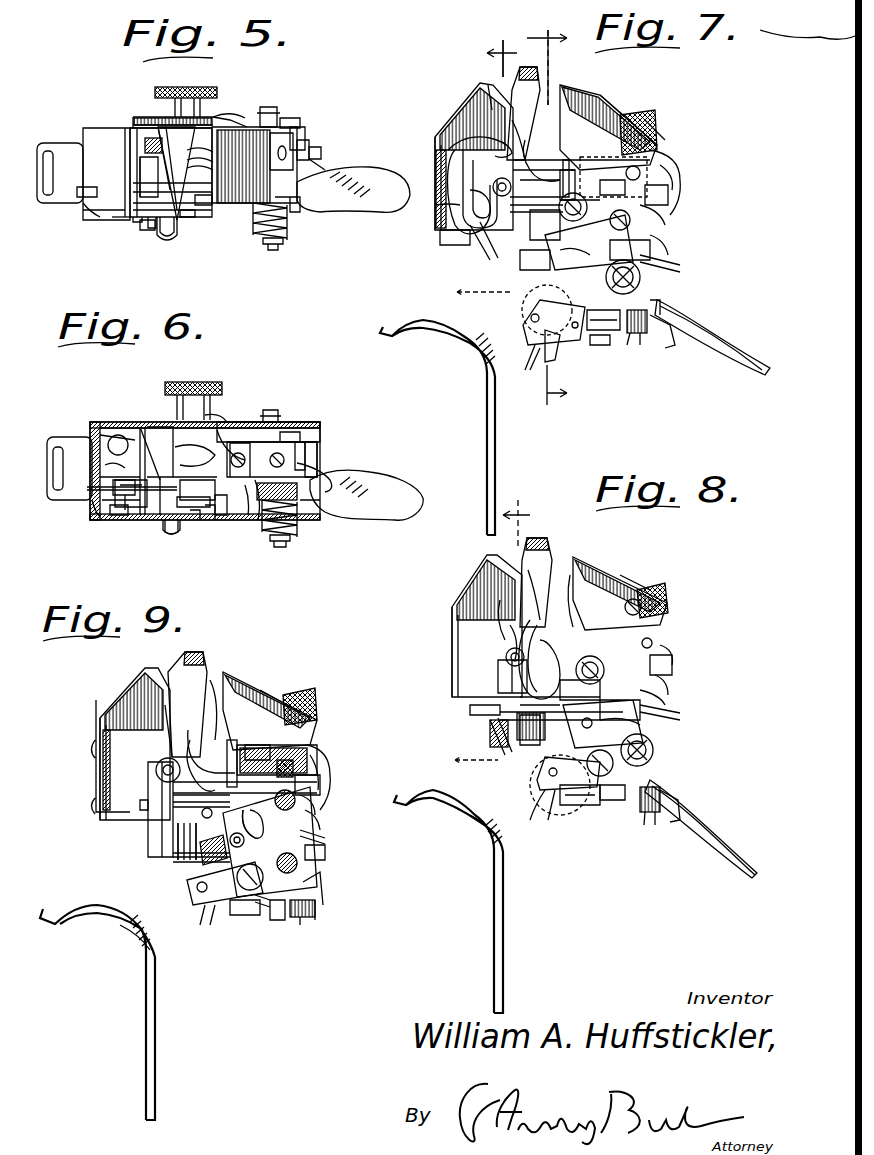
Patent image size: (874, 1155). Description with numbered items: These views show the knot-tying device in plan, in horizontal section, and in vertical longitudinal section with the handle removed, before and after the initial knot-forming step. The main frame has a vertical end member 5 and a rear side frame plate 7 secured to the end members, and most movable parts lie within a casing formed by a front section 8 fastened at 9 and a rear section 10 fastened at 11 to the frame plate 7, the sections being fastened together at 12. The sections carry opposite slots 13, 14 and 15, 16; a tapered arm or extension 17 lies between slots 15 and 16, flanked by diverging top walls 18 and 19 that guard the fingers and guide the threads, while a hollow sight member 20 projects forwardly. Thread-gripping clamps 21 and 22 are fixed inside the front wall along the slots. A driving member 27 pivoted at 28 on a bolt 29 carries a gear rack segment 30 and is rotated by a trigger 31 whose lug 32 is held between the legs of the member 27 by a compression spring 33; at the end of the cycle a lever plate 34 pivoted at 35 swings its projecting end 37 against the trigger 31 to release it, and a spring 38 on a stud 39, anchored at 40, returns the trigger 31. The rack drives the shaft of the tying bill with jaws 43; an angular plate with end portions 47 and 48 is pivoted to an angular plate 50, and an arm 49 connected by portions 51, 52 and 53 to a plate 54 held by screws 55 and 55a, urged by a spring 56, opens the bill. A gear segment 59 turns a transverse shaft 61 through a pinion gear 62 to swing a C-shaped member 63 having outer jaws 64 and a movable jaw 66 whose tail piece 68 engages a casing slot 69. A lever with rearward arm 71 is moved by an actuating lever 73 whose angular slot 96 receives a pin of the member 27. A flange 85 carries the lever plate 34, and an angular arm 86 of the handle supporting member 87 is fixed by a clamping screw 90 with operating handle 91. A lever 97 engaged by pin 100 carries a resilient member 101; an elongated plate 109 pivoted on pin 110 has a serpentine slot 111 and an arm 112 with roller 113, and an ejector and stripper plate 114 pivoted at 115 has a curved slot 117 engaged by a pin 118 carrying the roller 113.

In FIG. 5, the end member 5 is at (140, 170).
In FIG. 6, the end member 5 is at (115, 435).
In FIG. 9, the end member 5 is at (173, 857).
In FIG. 9, the rear side frame plate 7 is at (173, 805).
In FIG. 5, the front casing section 8 is at (120, 217).
In FIG. 6, the front casing section 8 is at (200, 520).
In FIG. 6, the fastening 9 is at (297, 492).
In FIG. 5, the rear casing section 10 is at (120, 128).
In FIG. 6, the rear casing section 10 is at (125, 422).
In FIG. 7, the rear casing section 10 is at (585, 95).
In FIG. 8, the rear casing section 10 is at (585, 560).
In FIG. 9, the rear casing section 10 is at (255, 675).
In FIG. 7, the fastening 11 is at (472, 159).
In FIG. 5, the fastening 12 is at (270, 158).
In FIG. 7, the fastening 12 is at (425, 230).
In FIG. 8, the fastening 12 is at (688, 584).
In FIG. 9, the fastening 12 is at (95, 800).
In FIG. 5, the slot 13 is at (152, 228).
In FIG. 6, the slot 13 is at (140, 520).
In FIG. 5, the slot 14 is at (187, 218).
In FIG. 6, the slot 14 is at (180, 520).
In FIG. 5, the slot 15 is at (160, 130).
In FIG. 6, the slot 15 is at (155, 395).
In FIG. 7, the slot 15 is at (483, 122).
In FIG. 8, the slot 15 is at (503, 605).
In FIG. 9, the slot 15 is at (165, 720).
In FIG. 5, the slot 16 is at (215, 120).
In FIG. 6, the slot 16 is at (205, 415).
In FIG. 7, the slot 16 is at (520, 130).
In FIG. 8, the slot 16 is at (542, 605).
In FIG. 9, the slot 16 is at (215, 690).
In FIG. 5, the arm or extension 17 is at (176, 173).
In FIG. 7, the arm or extension 17 is at (530, 67).
In FIG. 8, the arm or extension 17 is at (545, 540).
In FIG. 9, the arm or extension 17 is at (195, 652).
In FIG. 5, the top wall 18 is at (295, 200).
In FIG. 7, the top wall 18 is at (620, 120).
In FIG. 9, the top wall 18 is at (290, 705).
In FIG. 5, the top wall 19 is at (88, 137).
In FIG. 7, the top wall 19 is at (470, 90).
In FIG. 8, the top wall 19 is at (478, 568).
In FIG. 9, the top wall 19 is at (130, 680).
In FIG. 5, the hollow elongated member 20 is at (172, 235).
In FIG. 6, the hollow elongated member 20 is at (170, 532).
In FIG. 6, the thread-gripping clamp 21 is at (210, 520).
In FIG. 7, the thread-gripping clamp 21 is at (581, 346).
In FIG. 6, the thread-gripping clamp 22 is at (120, 492).
In FIG. 7, the driving member 27 is at (675, 258).
In FIG. 8, the driving member 27 is at (670, 708).
In FIG. 9, the driving member 27 is at (317, 835).
In FIG. 9, the pivot 28 is at (300, 863).
In FIG. 5, the bolt 29 is at (273, 248).
In FIG. 6, the bolt 29 is at (285, 540).
In FIG. 9, the bolt 29 is at (272, 920).
In FIG. 8, the gear rack segment 30 is at (665, 650).
In FIG. 9, the gear rack segment 30 is at (215, 760).
In FIG. 5, the trigger 31 is at (365, 180).
In FIG. 6, the trigger 31 is at (395, 488).
In FIG. 7, the trigger 31 is at (690, 308).
In FIG. 8, the trigger 31 is at (690, 800).
In FIG. 8, the lug 32 is at (655, 748).
In FIG. 9, the lug 32 is at (320, 850).
In FIG. 5, the helical compression spring 33 is at (285, 225).
In FIG. 6, the helical compression spring 33 is at (292, 522).
In FIG. 7, the lever plate 34 is at (612, 335).
In FIG. 8, the lever plate 34 is at (580, 805).
In FIG. 9, the lever plate 34 is at (240, 915).
In FIG. 9, the pivot 35 is at (255, 905).
In FIG. 5, the projecting end 37 is at (315, 152).
In FIG. 9, the projecting end 37 is at (325, 880).
In FIG. 7, the spring 38 is at (642, 340).
In FIG. 8, the spring 38 is at (640, 812).
In FIG. 9, the spring 38 is at (295, 917).
In FIG. 7, the stud 39 is at (632, 345).
In FIG. 8, the stud 39 is at (650, 825).
In FIG. 9, the stud 39 is at (315, 920).
In FIG. 5, the anchor point 40 is at (322, 163).
In FIG. 7, the anchor point 40 is at (675, 345).
In FIG. 8, the anchor point 40 is at (672, 822).
In FIG. 7, the tying bill jaws 43 is at (536, 156).
In FIG. 9, the tying bill jaws 43 is at (190, 740).
In FIG. 5, the forwardly extending end portion 47 is at (203, 208).
In FIG. 6, the forwardly extending end portion 47 is at (222, 515).
In FIG. 7, the forwardly extending end portion 47 is at (560, 180).
In FIG. 8, the forwardly extending end portion 47 is at (570, 575).
In FIG. 9, the forwardly extending end portion 47 is at (245, 745).
In FIG. 6, the end portion 48 is at (262, 505).
In FIG. 6, the arm 49 is at (250, 500).
In FIG. 7, the arm 49 is at (660, 240).
In FIG. 8, the arm 49 is at (665, 672).
In FIG. 9, the arm 49 is at (320, 805).
In FIG. 6, the angular plate 50 is at (300, 440).
In FIG. 9, the angular plate 50 is at (278, 805).
In FIG. 7, the upwardly extending portion 51 is at (660, 215).
In FIG. 9, the upwardly extending portion 51 is at (320, 790).
In FIG. 5, the rearwardly extending portion 52 is at (303, 142).
In FIG. 6, the rearwardly extending portion 52 is at (318, 448).
In FIG. 7, the rearwardly extending portion 52 is at (665, 195).
In FIG. 8, the rearwardly extending portion 52 is at (670, 660).
In FIG. 9, the rearwardly extending portion 52 is at (320, 775).
In FIG. 5, the upwardly extending portion 53 is at (297, 128).
In FIG. 6, the upwardly extending portion 53 is at (310, 436).
In FIG. 9, the upwardly extending portion 53 is at (320, 760).
In FIG. 6, the plate 54 is at (270, 410).
In FIG. 5, the screw 55 is at (268, 107).
In FIG. 6, the screw 55 is at (232, 425).
In FIG. 5, the screw 55a is at (288, 118).
In FIG. 6, the screw 55a is at (290, 428).
In FIG. 6, the spring 56 is at (328, 468).
In FIG. 7, the spring 56 is at (675, 160).
In FIG. 9, the spring 56 is at (325, 740).
In FIG. 9, the gear segment 59 is at (140, 805).
In FIG. 7, the transverse horizontal shaft 61 is at (440, 205).
In FIG. 8, the transverse horizontal shaft 61 is at (508, 665).
In FIG. 9, the transverse horizontal shaft 61 is at (160, 760).
In FIG. 5, the pinion gear 62 is at (145, 147).
In FIG. 6, the pinion gear 62 is at (112, 450).
In FIG. 5, the C-shaped member 63 is at (135, 220).
In FIG. 6, the C-shaped member 63 is at (118, 512).
In FIG. 7, the C-shaped member 63 is at (450, 245).
In FIG. 8, the C-shaped member 63 is at (510, 630).
In FIG. 7, the outer jaws 64 is at (493, 95).
In FIG. 7, the movable jaw 66 is at (495, 178).
In FIG. 5, the tail piece 68 is at (70, 203).
In FIG. 6, the tail piece 68 is at (60, 500).
In FIG. 7, the tail piece 68 is at (440, 160).
In FIG. 8, the tail piece 68 is at (565, 630).
In FIG. 5, the slot 69 is at (95, 220).
In FIG. 6, the slot 69 is at (95, 515).
In FIG. 7, the slot 69 is at (440, 130).
In FIG. 8, the slot 69 is at (450, 600).
In FIG. 9, the slot 69 is at (98, 770).
In FIG. 9, the rearwardly projecting arm 71 is at (178, 860).
In FIG. 9, the actuating lever 73 is at (190, 900).
In FIG. 8, the flange 85 is at (565, 820).
In FIG. 9, the flange 85 is at (210, 920).
In FIG. 8, the angular arm 86 is at (480, 825).
In FIG. 9, the angular arm 86 is at (125, 927).
In FIG. 8, the supporting member 87 is at (503, 925).
In FIG. 9, the supporting member 87 is at (155, 1057).
In FIG. 7, the clamping screw 90 is at (540, 345).
In FIG. 8, the clamping screw 90 is at (587, 764).
In FIG. 5, the operating handle 91 is at (205, 90).
In FIG. 6, the operating handle 91 is at (195, 382).
In FIG. 7, the operating handle 91 is at (520, 312).
In FIG. 8, the operating handle 91 is at (530, 776).
In FIG. 9, the angular elongated slot 96 is at (244, 876).
In FIG. 7, the lever 97 is at (480, 250).
In FIG. 8, the lever 97 is at (492, 727).
In FIG. 7, the pin 100 is at (600, 350).
In FIG. 9, the pin 100 is at (259, 824).
In FIG. 8, the resilient flexible member 101 is at (470, 712).
In FIG. 7, the elongated plate 109 is at (610, 226).
In FIG. 8, the elongated plate 109 is at (660, 720).
In FIG. 7, the pin 110 is at (670, 175).
In FIG. 8, the pin 110 is at (665, 690).
In FIG. 7, the serpentine slot 111 is at (645, 277).
In FIG. 8, the serpentine slot 111 is at (615, 795).
In FIG. 8, the arm 112 is at (605, 661).
In FIG. 7, the roller 113 is at (580, 150).
In FIG. 8, the roller 113 is at (625, 620).
In FIG. 7, the ejector and stripper plate 114 is at (616, 168).
In FIG. 7, the pivot 115 is at (655, 125).
In FIG. 7, the curved elongated slot 117 is at (610, 184).
In FIG. 8, the pin 118 is at (630, 580).